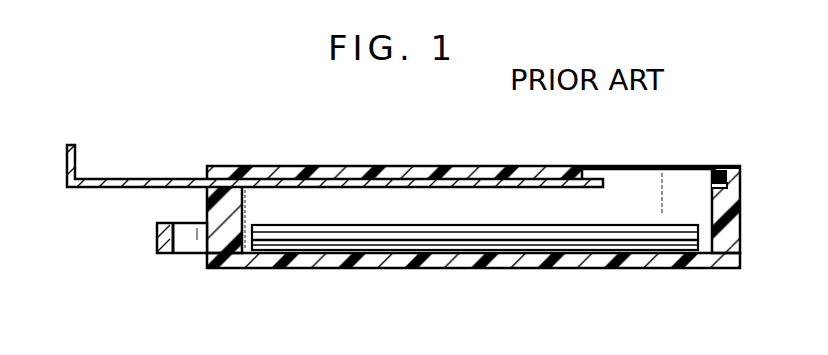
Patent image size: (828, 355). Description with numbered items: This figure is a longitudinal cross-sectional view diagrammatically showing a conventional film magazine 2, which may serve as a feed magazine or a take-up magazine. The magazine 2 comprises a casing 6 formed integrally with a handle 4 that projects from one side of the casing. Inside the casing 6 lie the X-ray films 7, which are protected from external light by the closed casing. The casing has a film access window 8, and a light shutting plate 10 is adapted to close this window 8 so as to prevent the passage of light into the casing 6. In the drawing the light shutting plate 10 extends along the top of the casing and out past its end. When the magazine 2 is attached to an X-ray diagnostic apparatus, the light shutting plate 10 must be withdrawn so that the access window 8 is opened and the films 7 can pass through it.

The magazine 2 is at (473, 205).
The handle 4 is at (187, 254).
The casing 6 is at (382, 262).
The X-ray films 7 is at (577, 233).
The film access window 8 is at (633, 187).
The light shutting plate 10 is at (110, 188).